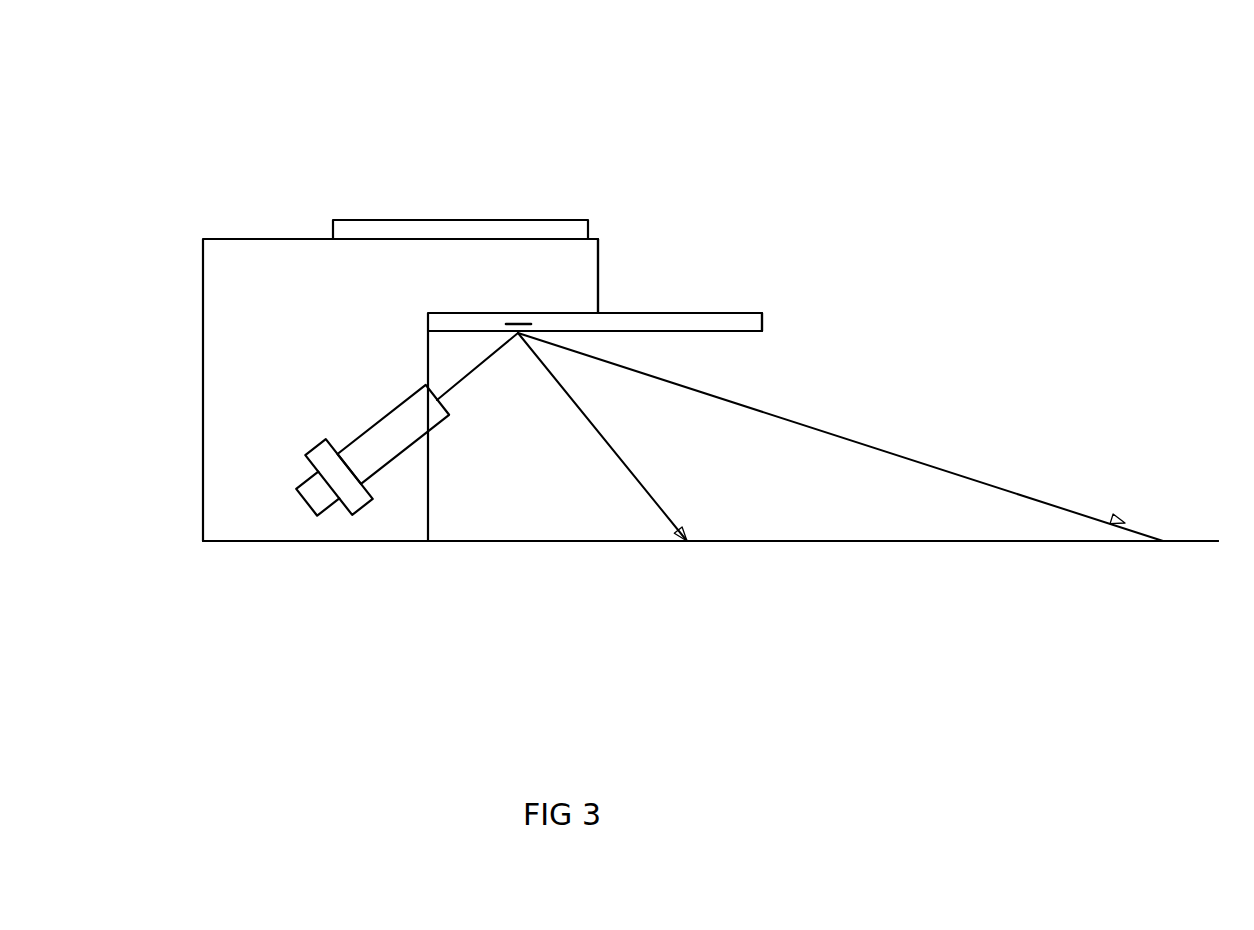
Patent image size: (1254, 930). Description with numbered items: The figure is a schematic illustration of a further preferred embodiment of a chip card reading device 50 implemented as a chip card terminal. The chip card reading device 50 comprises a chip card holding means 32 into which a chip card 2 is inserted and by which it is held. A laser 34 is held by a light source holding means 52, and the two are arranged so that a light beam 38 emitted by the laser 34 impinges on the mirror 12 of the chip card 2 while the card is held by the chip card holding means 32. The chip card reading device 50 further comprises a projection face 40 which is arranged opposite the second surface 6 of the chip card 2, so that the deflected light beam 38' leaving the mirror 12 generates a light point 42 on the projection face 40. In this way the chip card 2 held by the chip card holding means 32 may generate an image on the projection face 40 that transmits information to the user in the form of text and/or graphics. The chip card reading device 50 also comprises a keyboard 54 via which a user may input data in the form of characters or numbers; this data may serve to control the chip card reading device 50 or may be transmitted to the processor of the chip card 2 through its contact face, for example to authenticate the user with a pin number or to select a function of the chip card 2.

The chip card reading device 50 is at (273, 133).
The keyboard 54 is at (462, 228).
The chip card holding means 32 is at (575, 302).
The chip card 2 is at (683, 318).
The second surface 6 is at (748, 332).
The mirror 12 is at (513, 317).
The laser 34 is at (373, 448).
The light source holding means 52 is at (323, 457).
The light beam 38 is at (585, 476).
The deflected light beam 38' is at (840, 435).
The projection face 40 is at (997, 541).
The light point 42 is at (1185, 541).